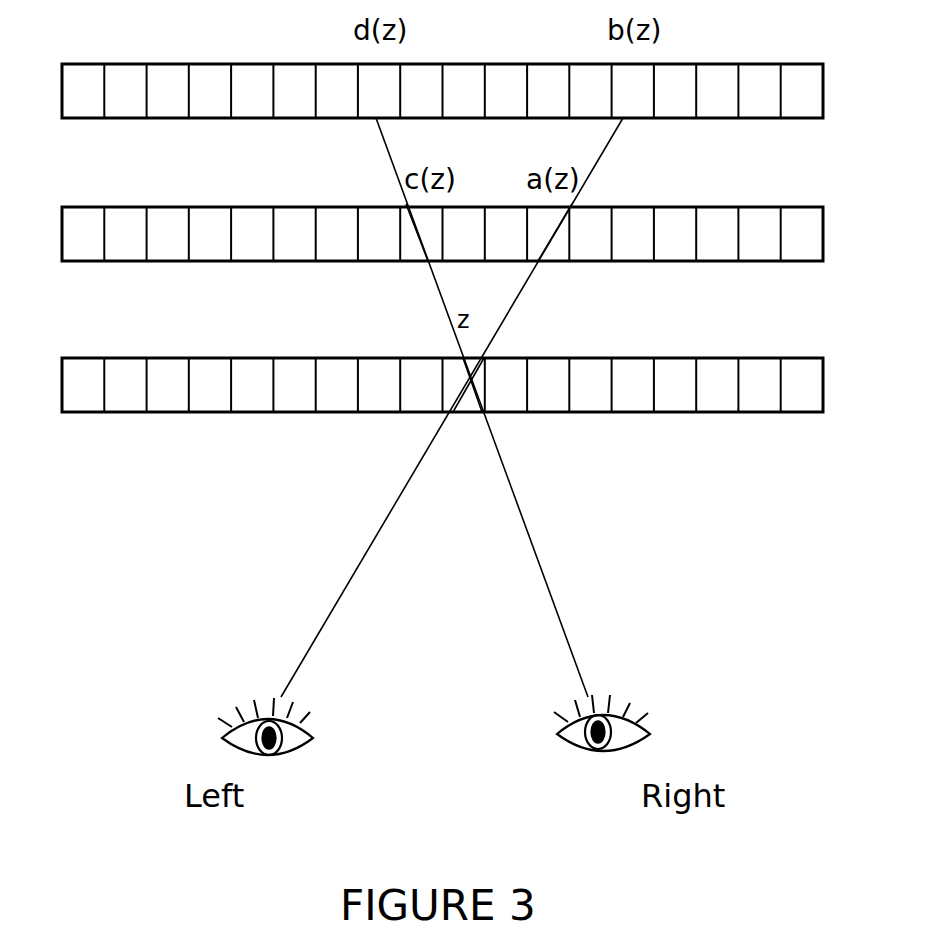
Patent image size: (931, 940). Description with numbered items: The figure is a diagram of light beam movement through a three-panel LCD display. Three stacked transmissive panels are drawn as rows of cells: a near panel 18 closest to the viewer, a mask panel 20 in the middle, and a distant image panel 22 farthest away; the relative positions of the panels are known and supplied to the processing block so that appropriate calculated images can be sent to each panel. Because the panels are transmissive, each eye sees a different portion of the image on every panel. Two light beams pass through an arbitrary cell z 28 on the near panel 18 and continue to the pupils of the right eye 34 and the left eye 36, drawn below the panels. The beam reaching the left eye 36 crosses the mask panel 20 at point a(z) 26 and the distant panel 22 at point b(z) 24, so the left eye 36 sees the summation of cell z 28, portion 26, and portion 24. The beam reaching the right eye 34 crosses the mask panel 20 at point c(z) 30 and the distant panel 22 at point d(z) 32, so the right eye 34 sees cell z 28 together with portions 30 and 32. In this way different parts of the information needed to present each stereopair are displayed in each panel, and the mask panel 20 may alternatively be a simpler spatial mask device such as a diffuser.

The near panel 18 is at (62, 392).
The mask panel 20 is at (62, 238).
The distant image panel 22 is at (62, 95).
The portion b(z) 24 is at (632, 120).
The portion a(z) 26 is at (557, 262).
The cell z 28 is at (458, 411).
The portion c(z) 30 is at (415, 262).
The portion d(z) 32 is at (366, 120).
The right eye 34 is at (602, 713).
The left eye 36 is at (265, 716).